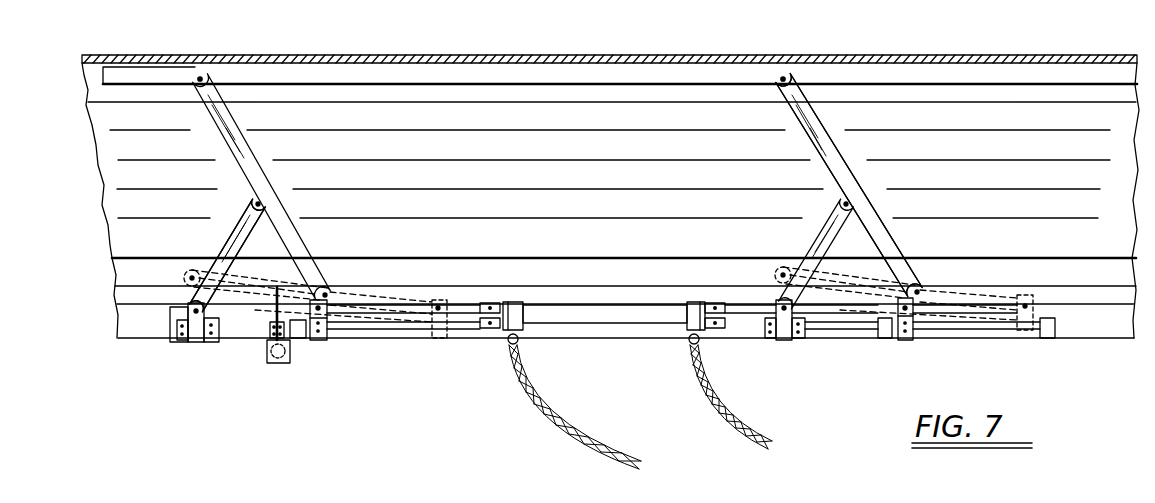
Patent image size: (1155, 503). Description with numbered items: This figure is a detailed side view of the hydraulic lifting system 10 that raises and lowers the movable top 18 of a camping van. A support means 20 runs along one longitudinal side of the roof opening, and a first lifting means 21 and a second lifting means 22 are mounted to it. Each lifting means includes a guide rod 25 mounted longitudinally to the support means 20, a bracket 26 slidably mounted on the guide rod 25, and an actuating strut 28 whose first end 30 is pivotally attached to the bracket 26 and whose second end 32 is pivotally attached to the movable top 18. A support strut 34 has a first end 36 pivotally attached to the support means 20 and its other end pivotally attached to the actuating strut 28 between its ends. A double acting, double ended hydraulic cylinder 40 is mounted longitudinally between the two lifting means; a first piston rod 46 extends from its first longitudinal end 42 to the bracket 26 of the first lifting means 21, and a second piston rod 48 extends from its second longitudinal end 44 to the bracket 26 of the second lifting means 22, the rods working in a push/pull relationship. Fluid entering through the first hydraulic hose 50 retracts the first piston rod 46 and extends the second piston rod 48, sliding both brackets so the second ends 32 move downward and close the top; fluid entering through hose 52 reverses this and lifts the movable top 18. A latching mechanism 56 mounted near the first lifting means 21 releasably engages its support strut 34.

The hydraulic lifting system 10 is at (788, 348).
The movable top 18 is at (942, 55).
The support means 20 is at (176, 318).
The first lifting means 21 is at (225, 207).
The second lifting means 22 is at (873, 188).
The guide rod 25 is at (408, 330).
The bracket 26 is at (315, 342).
The actuating strut 28 is at (224, 75).
The first end of actuating strut 30 is at (330, 292).
The second end of actuating strut 32 is at (204, 72).
The support strut 34 is at (228, 244).
The first end of support strut 36 is at (212, 330).
The hydraulic cylinder 40 is at (582, 322).
The first longitudinal end of hydraulic cylinder 42 is at (508, 333).
The second longitudinal end of hydraulic cylinder 44 is at (703, 332).
The first piston rod 46 is at (400, 315).
The second piston rod 48 is at (833, 320).
The first hydraulic hose 50 is at (555, 418).
The second hydraulic hose 52 is at (730, 412).
The latching mechanism 56 is at (268, 368).